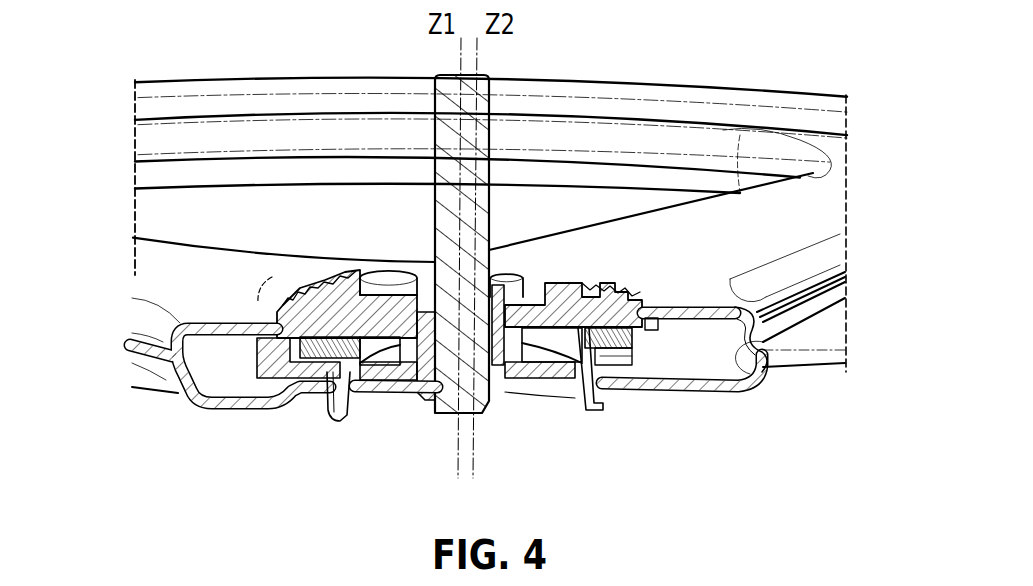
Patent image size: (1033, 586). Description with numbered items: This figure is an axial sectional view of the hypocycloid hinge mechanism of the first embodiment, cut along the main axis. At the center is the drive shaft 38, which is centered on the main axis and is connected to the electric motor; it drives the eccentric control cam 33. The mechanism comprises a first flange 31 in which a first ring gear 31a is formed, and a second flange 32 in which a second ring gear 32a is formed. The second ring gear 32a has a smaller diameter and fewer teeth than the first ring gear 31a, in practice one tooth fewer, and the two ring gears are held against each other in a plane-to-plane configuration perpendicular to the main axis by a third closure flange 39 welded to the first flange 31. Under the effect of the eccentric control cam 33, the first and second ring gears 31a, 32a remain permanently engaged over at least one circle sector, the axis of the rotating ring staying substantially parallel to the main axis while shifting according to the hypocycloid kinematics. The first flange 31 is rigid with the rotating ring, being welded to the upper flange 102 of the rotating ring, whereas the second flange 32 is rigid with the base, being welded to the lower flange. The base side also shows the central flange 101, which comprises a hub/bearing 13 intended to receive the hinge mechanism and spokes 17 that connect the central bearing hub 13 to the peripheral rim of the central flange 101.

The hub/bearing 13 is at (335, 407).
The spokes 17 is at (760, 246).
The first flange 31 is at (602, 313).
The first ring gear 31a is at (640, 343).
The second flange 32 is at (587, 412).
The second ring gear 32a is at (645, 357).
The eccentric control cam 33 is at (523, 380).
The drive shaft 38 is at (443, 400).
The third closure flange 39 is at (287, 395).
The central flange 101 is at (790, 323).
The upper flange 102 is at (820, 137).